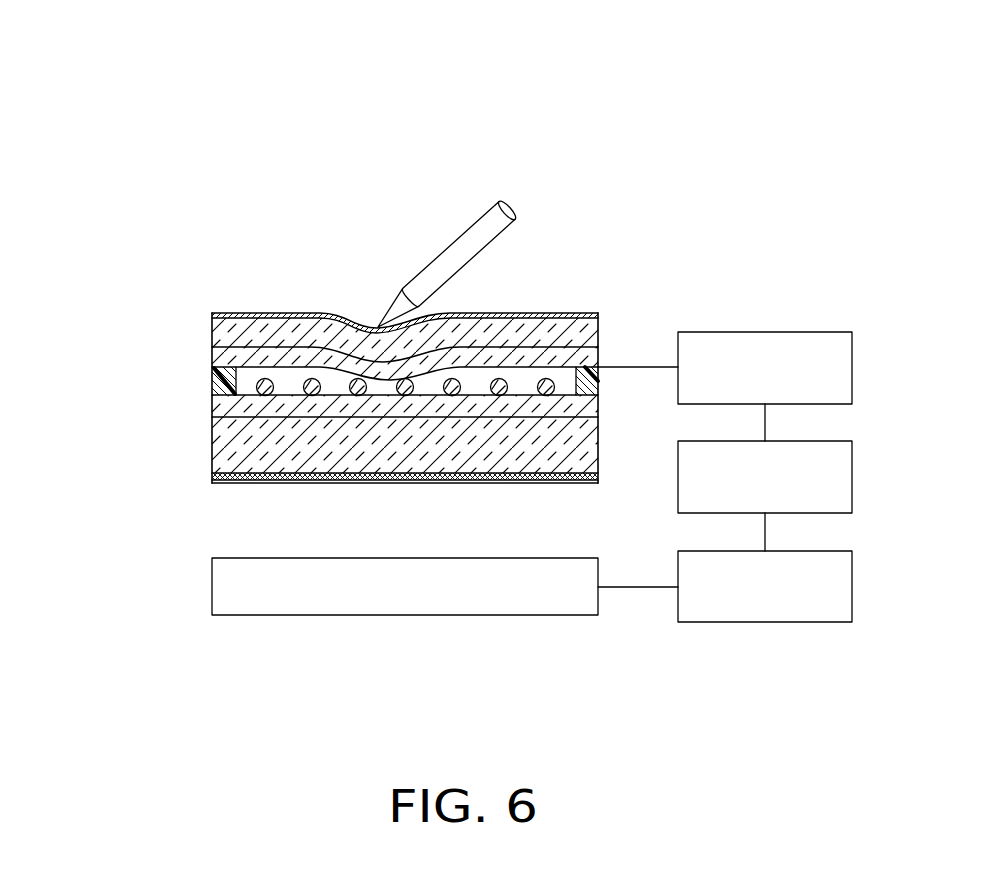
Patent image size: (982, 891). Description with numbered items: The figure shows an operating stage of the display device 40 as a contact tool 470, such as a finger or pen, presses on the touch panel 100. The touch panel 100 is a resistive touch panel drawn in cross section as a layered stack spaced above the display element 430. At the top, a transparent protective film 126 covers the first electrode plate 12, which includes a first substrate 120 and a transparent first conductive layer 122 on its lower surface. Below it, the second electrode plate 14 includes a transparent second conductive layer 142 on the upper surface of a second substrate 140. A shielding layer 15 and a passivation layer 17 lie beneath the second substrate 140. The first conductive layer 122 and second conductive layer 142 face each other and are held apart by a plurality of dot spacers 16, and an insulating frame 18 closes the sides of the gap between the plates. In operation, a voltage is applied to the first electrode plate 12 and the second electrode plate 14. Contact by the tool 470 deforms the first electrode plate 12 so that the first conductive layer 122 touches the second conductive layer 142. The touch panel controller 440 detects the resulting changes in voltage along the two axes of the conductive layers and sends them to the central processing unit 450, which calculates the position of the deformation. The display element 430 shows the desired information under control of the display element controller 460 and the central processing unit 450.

The display device 40 is at (481, 40).
The touch panel 100 is at (76, 265).
The first electrode plate 12 is at (121, 295).
The transparent protective film 126 is at (224, 313).
The first substrate 120 is at (222, 332).
The first conductive layer 122 is at (220, 356).
The second electrode plate 14 is at (124, 377).
The second conductive layer 142 is at (220, 405).
The second substrate 140 is at (222, 426).
The shielding layer 15 is at (215, 477).
The passivation layer 17 is at (225, 481).
The dot spacers 16 is at (544, 380).
The insulating frame 18 is at (600, 382).
The tool 470 is at (446, 266).
The touch panel controller 440 is at (757, 332).
The central processing unit 450 is at (817, 441).
The display element controller 460 is at (817, 551).
The display element 430 is at (227, 597).